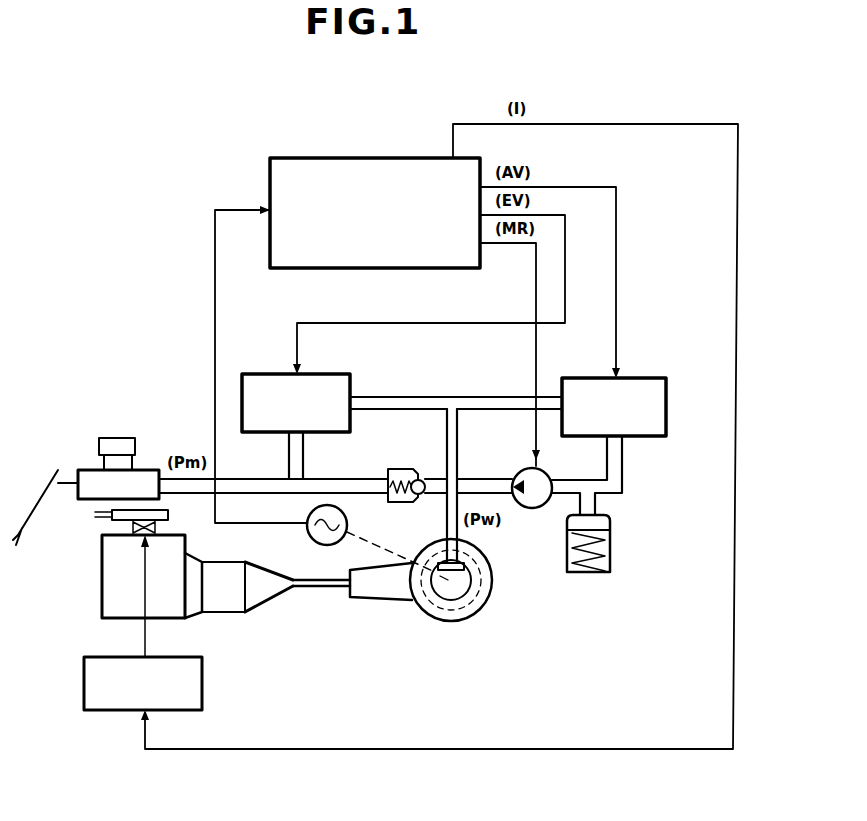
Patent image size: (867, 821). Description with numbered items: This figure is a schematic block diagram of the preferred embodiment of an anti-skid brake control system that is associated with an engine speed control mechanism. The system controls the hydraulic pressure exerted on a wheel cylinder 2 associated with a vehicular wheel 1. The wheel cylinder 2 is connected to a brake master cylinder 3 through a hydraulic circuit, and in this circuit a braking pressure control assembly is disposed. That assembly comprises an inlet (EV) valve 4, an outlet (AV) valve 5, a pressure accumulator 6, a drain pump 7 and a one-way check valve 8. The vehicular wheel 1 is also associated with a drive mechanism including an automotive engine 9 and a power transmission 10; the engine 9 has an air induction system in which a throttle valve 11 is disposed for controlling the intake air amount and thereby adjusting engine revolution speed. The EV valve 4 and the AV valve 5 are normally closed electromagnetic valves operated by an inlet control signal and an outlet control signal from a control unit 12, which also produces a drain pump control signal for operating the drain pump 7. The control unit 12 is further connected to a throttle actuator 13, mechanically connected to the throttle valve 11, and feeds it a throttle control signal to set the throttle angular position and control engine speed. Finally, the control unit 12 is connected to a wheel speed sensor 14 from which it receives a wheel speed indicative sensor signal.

The vehicular wheel 1 is at (447, 619).
The wheel cylinder 2 is at (462, 580).
The brake master cylinder 3 is at (88, 470).
The inlet (EV) valve 4 is at (340, 374).
The outlet (AV) valve 5 is at (646, 378).
The pressure accumulator 6 is at (611, 550).
The drain pump 7 is at (531, 508).
The one-way check valve 8 is at (399, 469).
The automotive engine 9 is at (102, 596).
The power transmission 10 is at (227, 612).
The throttle valve 11 is at (133, 524).
The control unit 12 is at (376, 158).
The throttle actuator 13 is at (204, 691).
The wheel speed sensor 14 is at (348, 524).